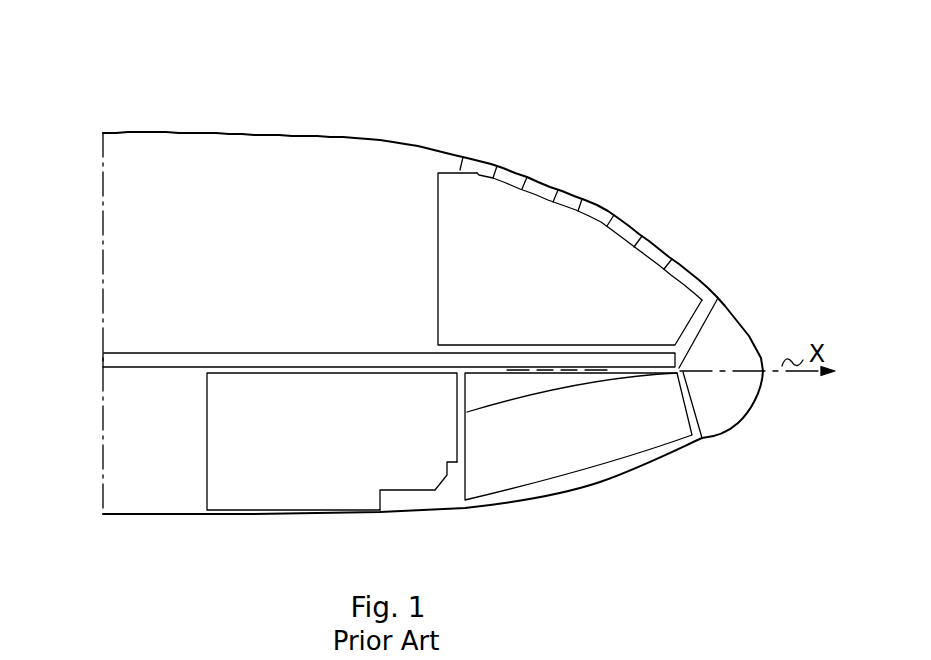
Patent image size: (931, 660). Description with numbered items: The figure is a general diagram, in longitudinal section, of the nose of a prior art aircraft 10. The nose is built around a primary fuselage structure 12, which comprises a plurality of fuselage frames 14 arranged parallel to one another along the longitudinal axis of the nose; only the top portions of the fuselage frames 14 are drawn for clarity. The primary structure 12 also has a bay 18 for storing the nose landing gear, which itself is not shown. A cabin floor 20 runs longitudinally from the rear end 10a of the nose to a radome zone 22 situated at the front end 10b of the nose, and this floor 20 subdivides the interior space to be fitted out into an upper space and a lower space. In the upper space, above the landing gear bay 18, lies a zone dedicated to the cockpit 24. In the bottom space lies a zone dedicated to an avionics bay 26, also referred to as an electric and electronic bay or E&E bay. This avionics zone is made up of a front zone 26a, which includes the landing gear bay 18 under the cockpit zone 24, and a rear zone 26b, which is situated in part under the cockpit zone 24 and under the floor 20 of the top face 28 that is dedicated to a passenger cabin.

The prior art aircraft 10 is at (567, 150).
The rear end of the nose 10a is at (127, 128).
The front end of the nose 10b is at (737, 298).
The primary fuselage structure 12 is at (593, 207).
The fuselage frames 14 is at (531, 177).
The landing gear bay 18 is at (563, 387).
The cabin floor 20 is at (343, 353).
The radome zone 22 is at (735, 338).
The cockpit zone 24 is at (500, 228).
The avionics bay zone 26 is at (250, 481).
The front zone of the avionics bay 26a is at (487, 392).
The rear zone of the avionics bay 26b is at (353, 458).
The top face dedicated to a passenger cabin 28 is at (245, 190).